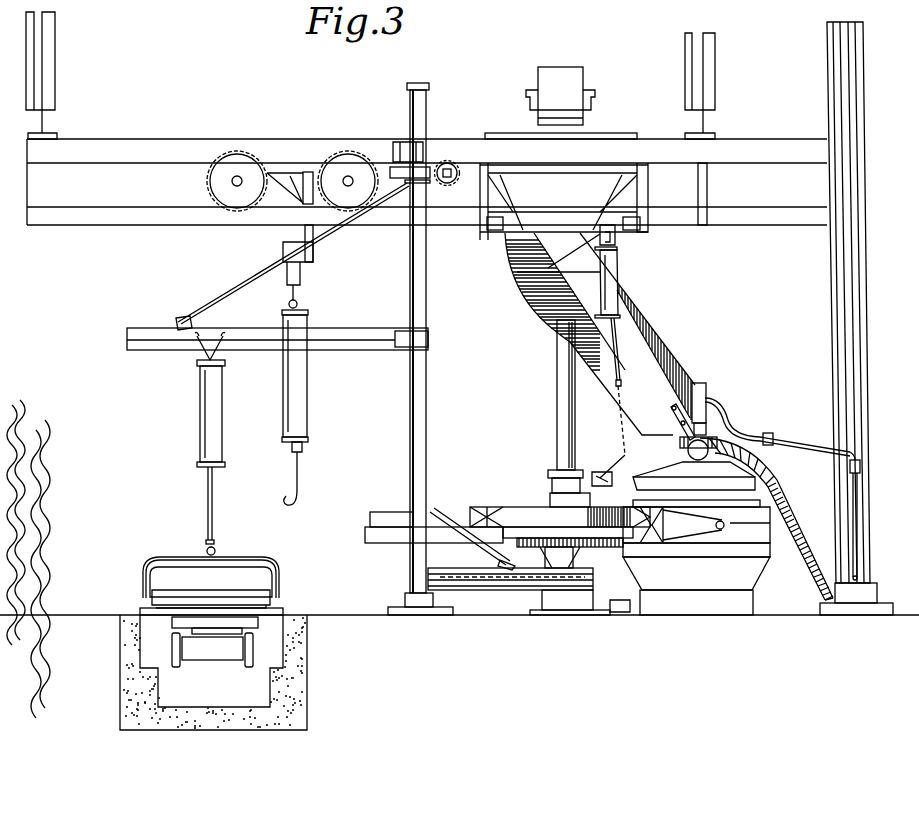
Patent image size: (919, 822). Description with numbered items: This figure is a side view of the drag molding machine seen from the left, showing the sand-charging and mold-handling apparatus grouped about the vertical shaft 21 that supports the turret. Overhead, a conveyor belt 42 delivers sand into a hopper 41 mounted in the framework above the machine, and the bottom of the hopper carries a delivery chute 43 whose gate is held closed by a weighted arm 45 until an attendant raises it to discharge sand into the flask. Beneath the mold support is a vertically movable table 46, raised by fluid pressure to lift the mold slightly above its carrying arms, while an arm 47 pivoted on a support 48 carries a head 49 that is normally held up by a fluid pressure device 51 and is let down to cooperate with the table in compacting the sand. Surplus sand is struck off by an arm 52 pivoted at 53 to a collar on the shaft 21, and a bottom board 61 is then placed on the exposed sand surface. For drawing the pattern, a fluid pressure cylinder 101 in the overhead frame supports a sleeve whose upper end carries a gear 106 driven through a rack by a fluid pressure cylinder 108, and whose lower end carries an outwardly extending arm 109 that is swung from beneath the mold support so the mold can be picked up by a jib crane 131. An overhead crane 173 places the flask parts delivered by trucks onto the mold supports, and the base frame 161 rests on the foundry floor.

The vertical shaft 21 is at (556, 410).
The hopper 41 is at (606, 133).
The conveyor belt 42 is at (570, 60).
The delivery chute 43 is at (655, 360).
The weighted arm 45 is at (715, 437).
The vertically movable table 46 is at (725, 553).
The arm 47 is at (780, 500).
The support 48 is at (850, 520).
The head 49 is at (698, 470).
The fluid pressure device 51 is at (707, 391).
The strike-off arm 52 is at (660, 500).
The pivot 53 is at (599, 472).
The bottom board 61 is at (524, 512).
The fluid pressure cylinder 101 is at (427, 104).
The gear 106 is at (395, 158).
The fluid pressure cylinder 108 is at (452, 180).
The arm 109 is at (470, 580).
The jib crane 131 is at (201, 410).
The base frame 161 is at (547, 570).
The overhead crane 173 is at (289, 172).